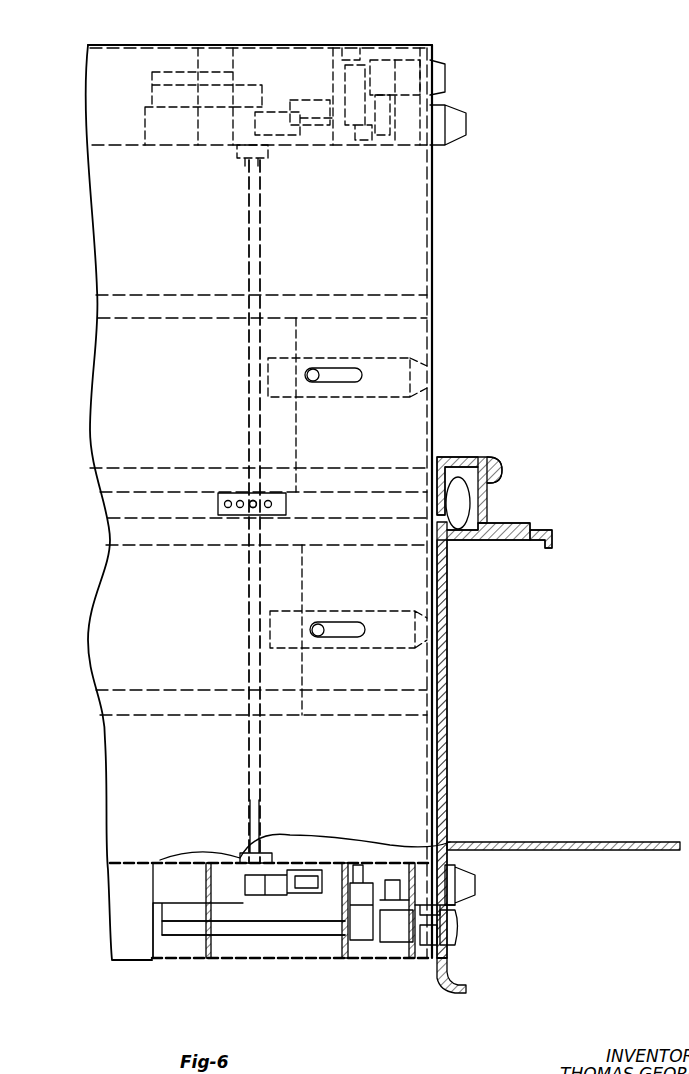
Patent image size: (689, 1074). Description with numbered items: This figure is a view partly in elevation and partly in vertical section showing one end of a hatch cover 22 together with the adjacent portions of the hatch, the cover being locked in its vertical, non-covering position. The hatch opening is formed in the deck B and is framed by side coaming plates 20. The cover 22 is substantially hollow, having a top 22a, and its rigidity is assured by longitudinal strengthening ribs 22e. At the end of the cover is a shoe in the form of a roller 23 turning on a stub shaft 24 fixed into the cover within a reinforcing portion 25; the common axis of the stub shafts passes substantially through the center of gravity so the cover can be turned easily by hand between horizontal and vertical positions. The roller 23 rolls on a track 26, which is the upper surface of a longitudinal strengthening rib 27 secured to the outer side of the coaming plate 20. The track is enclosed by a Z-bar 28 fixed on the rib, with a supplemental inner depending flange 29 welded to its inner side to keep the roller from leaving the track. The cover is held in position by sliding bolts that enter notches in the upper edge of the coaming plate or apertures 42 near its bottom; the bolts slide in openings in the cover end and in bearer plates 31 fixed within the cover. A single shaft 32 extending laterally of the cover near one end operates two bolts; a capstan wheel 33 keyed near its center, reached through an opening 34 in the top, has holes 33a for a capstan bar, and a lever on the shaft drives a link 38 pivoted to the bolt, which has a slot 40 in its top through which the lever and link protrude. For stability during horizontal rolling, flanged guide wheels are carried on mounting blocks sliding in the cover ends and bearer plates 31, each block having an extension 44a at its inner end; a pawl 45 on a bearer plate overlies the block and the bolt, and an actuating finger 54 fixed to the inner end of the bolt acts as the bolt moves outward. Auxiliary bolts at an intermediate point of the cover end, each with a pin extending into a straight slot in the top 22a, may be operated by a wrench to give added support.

The side coaming plate 20 is at (447, 684).
The cover 22 is at (440, 240).
The top 22a is at (212, 511).
The strengthening rib 22e is at (410, 310).
The roller 23 is at (462, 515).
The stub shaft 24 is at (448, 540).
The reinforcing portion 25 is at (465, 495).
The track 26 is at (492, 524).
The longitudinal strengthening rib 27 is at (524, 547).
The Z-bar 28 is at (492, 500).
The inner depending flange 29 is at (452, 470).
The bearer plate 31 is at (208, 952).
The shaft 32 is at (258, 238).
The capstan wheel 33 is at (232, 494).
The hole 33a is at (265, 512).
The opening 34 is at (245, 512).
The link 38 is at (310, 880).
The slot 40 is at (268, 858).
The aperture 42 is at (465, 906).
The extension 44a is at (307, 928).
The pawl 45 is at (362, 928).
The actuating finger 54 is at (156, 948).
The deck B is at (570, 842).